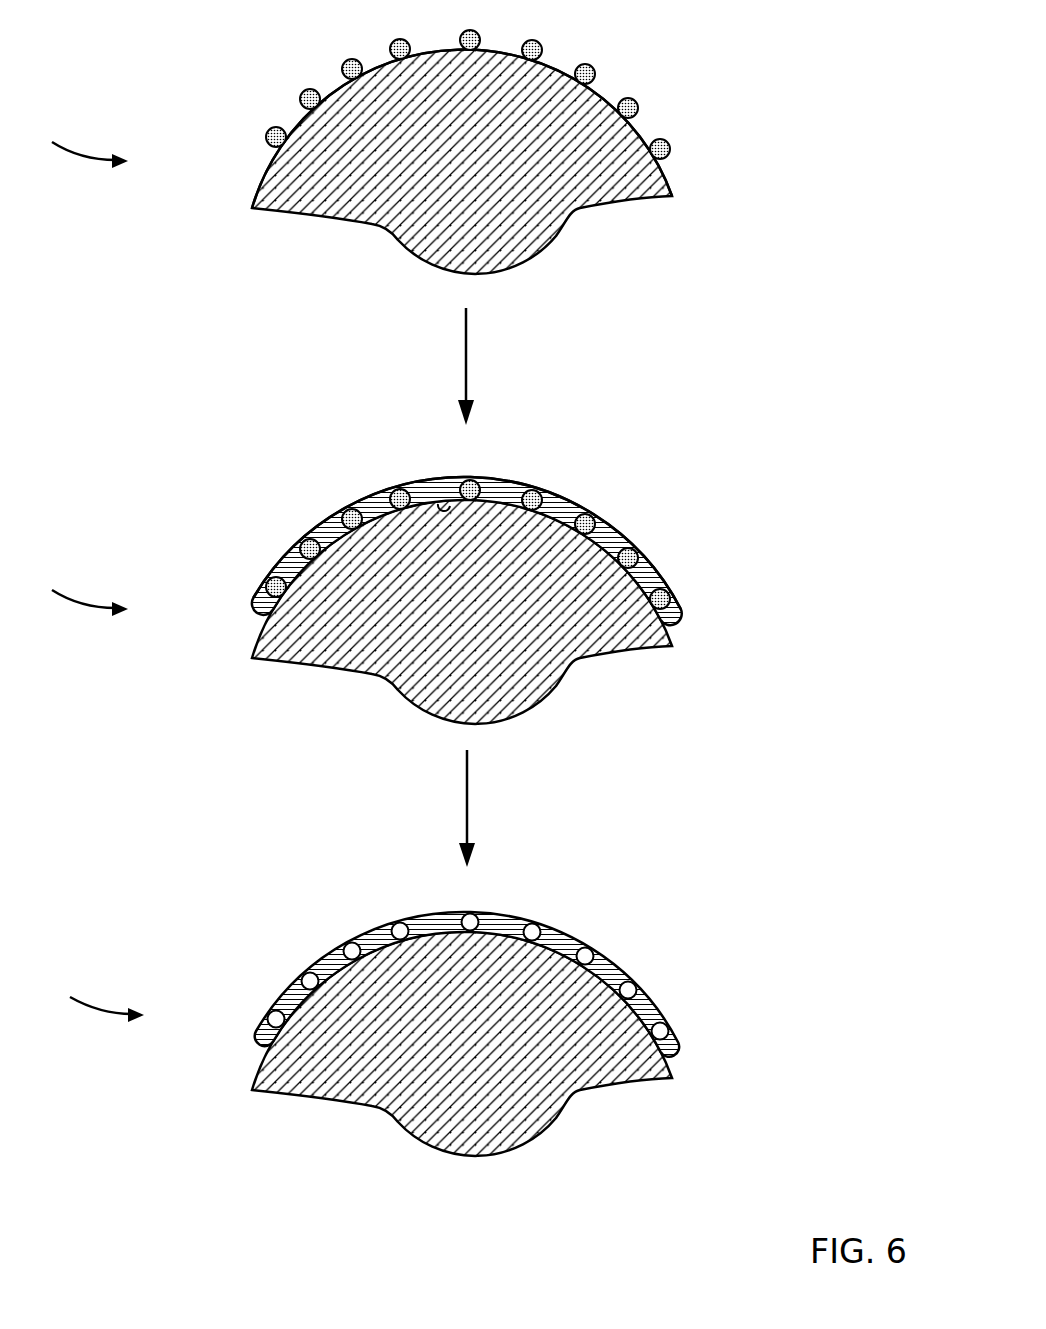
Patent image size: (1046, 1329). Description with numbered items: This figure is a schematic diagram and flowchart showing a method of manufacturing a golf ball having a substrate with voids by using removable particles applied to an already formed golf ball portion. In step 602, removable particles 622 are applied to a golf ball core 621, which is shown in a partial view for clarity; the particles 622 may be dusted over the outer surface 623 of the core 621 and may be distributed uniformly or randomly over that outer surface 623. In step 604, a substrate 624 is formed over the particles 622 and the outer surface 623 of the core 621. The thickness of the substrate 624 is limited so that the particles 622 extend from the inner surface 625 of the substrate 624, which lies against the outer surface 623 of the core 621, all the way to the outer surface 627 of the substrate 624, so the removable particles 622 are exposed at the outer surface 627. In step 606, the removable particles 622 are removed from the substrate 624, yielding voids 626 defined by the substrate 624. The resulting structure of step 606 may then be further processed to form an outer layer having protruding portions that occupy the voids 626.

The step 602 is at (80, 142).
The step 604 is at (82, 590).
The step 606 is at (99, 995).
The golf ball core 621 is at (617, 187).
The removable particles 622 is at (310, 88).
The outer surface of core 623 is at (603, 98).
The substrate 624 is at (615, 542).
The inner surface of substrate 625 is at (443, 508).
The voids 626 is at (590, 955).
The outer surface of substrate 627 is at (520, 483).